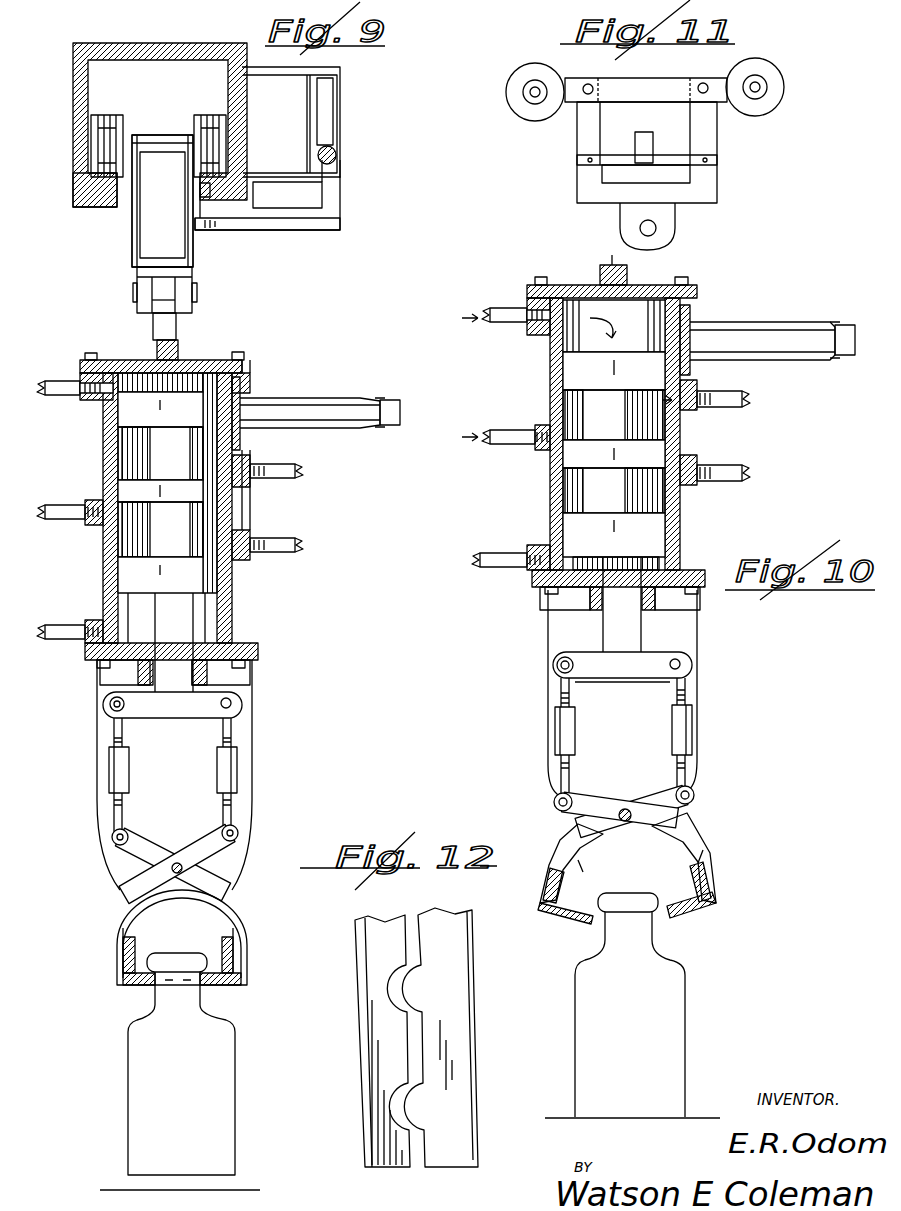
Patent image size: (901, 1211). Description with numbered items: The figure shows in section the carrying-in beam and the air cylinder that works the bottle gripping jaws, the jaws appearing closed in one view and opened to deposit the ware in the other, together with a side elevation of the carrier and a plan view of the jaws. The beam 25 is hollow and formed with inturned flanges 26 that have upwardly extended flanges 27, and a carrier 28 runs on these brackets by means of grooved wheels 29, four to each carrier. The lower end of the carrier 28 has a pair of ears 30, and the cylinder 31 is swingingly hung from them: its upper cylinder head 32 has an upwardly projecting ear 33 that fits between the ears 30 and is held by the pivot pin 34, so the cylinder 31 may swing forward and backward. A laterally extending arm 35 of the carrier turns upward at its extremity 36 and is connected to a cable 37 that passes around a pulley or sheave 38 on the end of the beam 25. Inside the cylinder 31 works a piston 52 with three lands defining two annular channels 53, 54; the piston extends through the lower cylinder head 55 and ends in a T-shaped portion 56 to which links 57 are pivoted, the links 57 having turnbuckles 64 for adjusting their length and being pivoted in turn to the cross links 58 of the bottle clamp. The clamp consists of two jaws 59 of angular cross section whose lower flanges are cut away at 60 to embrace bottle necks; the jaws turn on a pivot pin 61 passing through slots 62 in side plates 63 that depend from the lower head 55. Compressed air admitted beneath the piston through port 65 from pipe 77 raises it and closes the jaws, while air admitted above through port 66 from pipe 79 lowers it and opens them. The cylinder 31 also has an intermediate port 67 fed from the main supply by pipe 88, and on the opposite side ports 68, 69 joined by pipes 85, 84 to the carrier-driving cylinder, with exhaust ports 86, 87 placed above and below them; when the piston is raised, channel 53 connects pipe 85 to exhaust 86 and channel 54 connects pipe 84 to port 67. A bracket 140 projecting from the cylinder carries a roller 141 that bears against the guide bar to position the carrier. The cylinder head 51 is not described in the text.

In FIG. 9, the beam 25 is at (158, 34).
In FIG. 9, the inturned flanges 26 is at (104, 212).
In FIG. 9, the upwardly extended flanges 27 is at (122, 184).
In FIG. 9, the carrier 28 is at (132, 258).
In FIG. 11, the carrier 28 is at (710, 185).
In FIG. 9, the grooved wheels 29 is at (200, 115).
In FIG. 11, the grooved wheels 29 is at (525, 118).
In FIG. 9, the ears 30 is at (193, 303).
In FIG. 11, the ears 30 is at (675, 222).
In FIG. 9, the cylinder 31 is at (232, 521).
In FIG. 10, the cylinder 31 is at (690, 332).
In FIG. 9, the cylinder head 32 is at (178, 358).
In FIG. 10, the cylinder head 32 is at (645, 285).
In FIG. 9, the upwardly projecting ear 33 is at (153, 325).
In FIG. 10, the upwardly projecting ear 33 is at (612, 265).
In FIG. 9, the pivot pin 34 is at (197, 292).
In FIG. 9, the laterally extending arm 35 is at (297, 230).
In FIG. 11, the laterally extending arm 35 is at (580, 162).
In FIG. 9, the upwardly extending extremity 36 is at (330, 196).
In FIG. 11, the upwardly extending extremity 36 is at (650, 135).
In FIG. 9, the cable 37 is at (337, 152).
In FIG. 9, the pulley or sheave 38 is at (325, 102).
In FIG. 10, the cylinder head 51 is at (690, 526).
In FIG. 9, the piston 52 is at (180, 642).
In FIG. 10, the piston 52 is at (620, 622).
In FIG. 9, the annular channel 53 is at (210, 440).
In FIG. 10, the annular channel 53 is at (594, 406).
In FIG. 9, the annular channel 54 is at (118, 540).
In FIG. 10, the annular channel 54 is at (656, 505).
In FIG. 9, the lower cylinder head 55 is at (250, 680).
In FIG. 10, the lower cylinder head 55 is at (700, 590).
In FIG. 9, the T-shaped portion 56 is at (162, 712).
In FIG. 10, the T-shaped portion 56 is at (610, 672).
In FIG. 9, the links 57 is at (114, 815).
In FIG. 10, the links 57 is at (560, 695).
In FIG. 9, the cross links 58 is at (226, 852).
In FIG. 10, the cross links 58 is at (575, 814).
In FIG. 9, the jaws 59 is at (233, 962).
In FIG. 12, the jaws 59 is at (452, 1052).
In FIG. 10, the jaws 59 is at (692, 915).
In FIG. 12, the cut-away portions 60 is at (392, 985).
In FIG. 10, the cut-away portions 60 is at (675, 922).
In FIG. 9, the pivot pin 61 is at (177, 862).
In FIG. 10, the pivot pin 61 is at (620, 838).
In FIG. 9, the slots 62 is at (172, 900).
In FIG. 10, the slots 62 is at (623, 805).
In FIG. 9, the side plates 63 is at (240, 775).
In FIG. 10, the side plates 63 is at (700, 720).
In FIG. 9, the turnbuckles 64 is at (109, 770).
In FIG. 10, the turnbuckles 64 is at (556, 748).
In FIG. 9, the port 65 is at (110, 628).
In FIG. 10, the port 65 is at (538, 557).
In FIG. 9, the port 66 is at (95, 372).
In FIG. 10, the port 66 is at (553, 300).
In FIG. 9, the port 67 is at (103, 495).
In FIG. 10, the port 67 is at (550, 455).
In FIG. 9, the port 68 is at (238, 455).
In FIG. 10, the port 68 is at (686, 412).
In FIG. 9, the port 69 is at (238, 562).
In FIG. 10, the port 69 is at (690, 492).
In FIG. 9, the pipe 77 is at (50, 640).
In FIG. 10, the pipe 77 is at (498, 570).
In FIG. 9, the outlet pipe 79 is at (47, 386).
In FIG. 10, the outlet pipe 79 is at (495, 308).
In FIG. 9, the pipe 84 is at (290, 553).
In FIG. 10, the pipe 84 is at (730, 481).
In FIG. 9, the pipe 85 is at (296, 475).
In FIG. 10, the pipe 85 is at (713, 408).
In FIG. 9, the exhaust port 86 is at (92, 450).
In FIG. 10, the exhaust port 86 is at (558, 368).
In FIG. 9, the exhaust port 87 is at (112, 578).
In FIG. 10, the exhaust port 87 is at (580, 505).
In FIG. 9, the pipe 88 is at (47, 520).
In FIG. 10, the pipe 88 is at (498, 445).
In FIG. 9, the bracket 140 is at (340, 397).
In FIG. 10, the bracket 140 is at (758, 322).
In FIG. 9, the roller 141 is at (382, 404).
In FIG. 10, the roller 141 is at (850, 326).